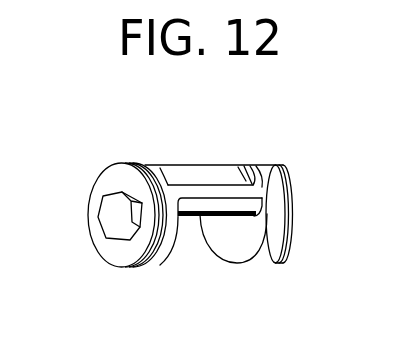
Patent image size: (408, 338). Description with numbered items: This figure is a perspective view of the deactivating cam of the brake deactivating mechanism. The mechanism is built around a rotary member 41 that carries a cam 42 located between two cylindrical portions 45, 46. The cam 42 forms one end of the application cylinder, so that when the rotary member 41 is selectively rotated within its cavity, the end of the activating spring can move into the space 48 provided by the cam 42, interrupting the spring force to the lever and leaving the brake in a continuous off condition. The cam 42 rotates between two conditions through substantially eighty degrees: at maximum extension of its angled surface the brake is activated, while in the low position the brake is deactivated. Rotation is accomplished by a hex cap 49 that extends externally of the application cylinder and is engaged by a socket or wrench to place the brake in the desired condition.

The rotary member 41 is at (267, 188).
The cam 42 is at (193, 176).
The cylindrical portion 45 is at (115, 180).
The cylindrical portion 46 is at (288, 228).
The space 48 is at (185, 252).
The hex cap 49 is at (110, 218).